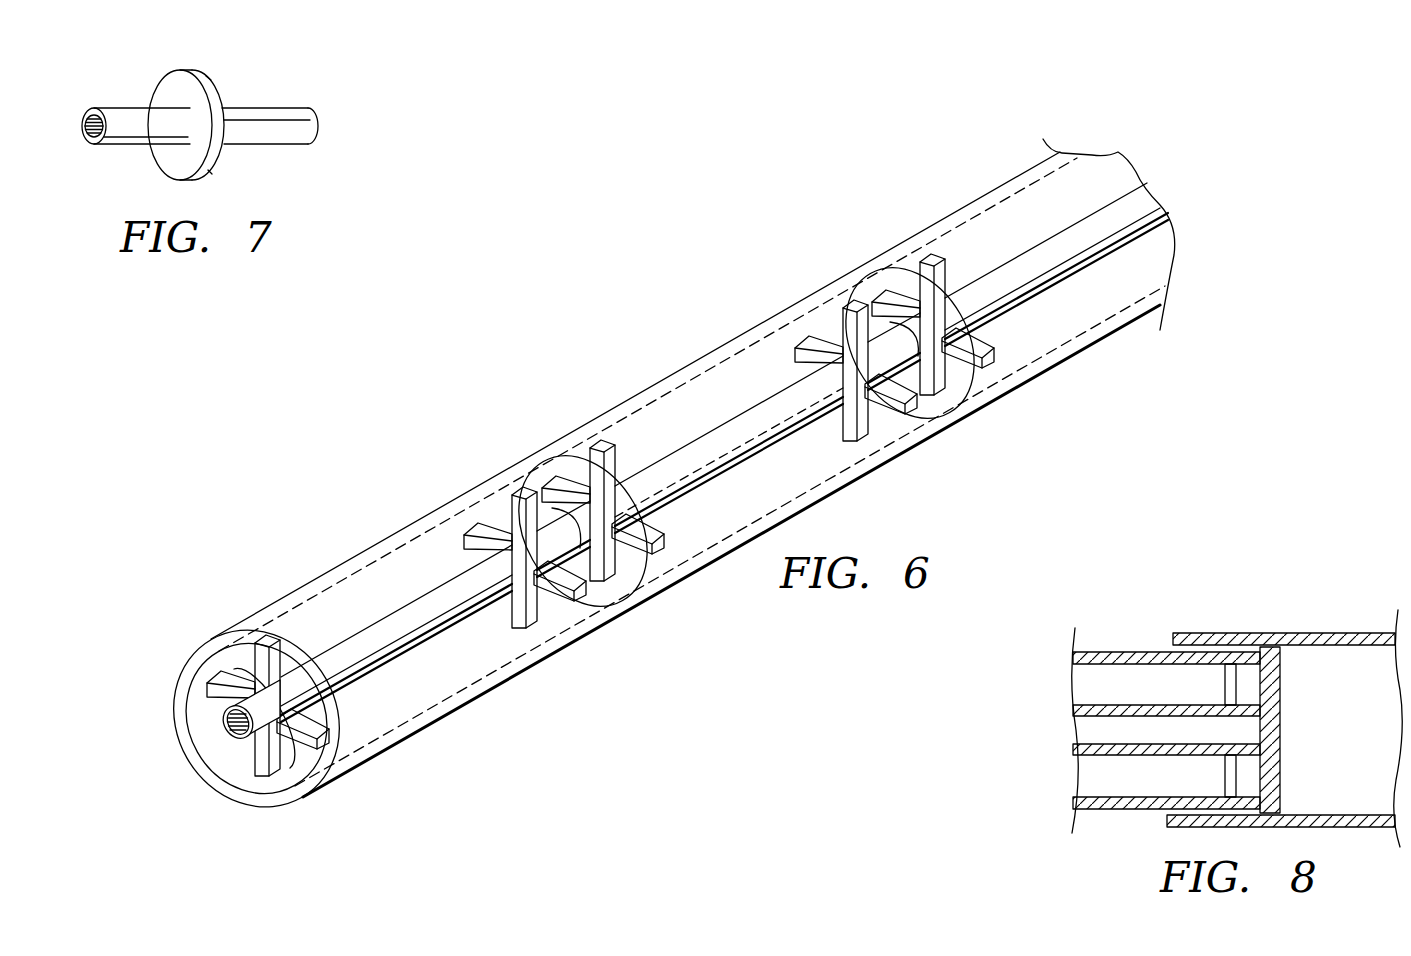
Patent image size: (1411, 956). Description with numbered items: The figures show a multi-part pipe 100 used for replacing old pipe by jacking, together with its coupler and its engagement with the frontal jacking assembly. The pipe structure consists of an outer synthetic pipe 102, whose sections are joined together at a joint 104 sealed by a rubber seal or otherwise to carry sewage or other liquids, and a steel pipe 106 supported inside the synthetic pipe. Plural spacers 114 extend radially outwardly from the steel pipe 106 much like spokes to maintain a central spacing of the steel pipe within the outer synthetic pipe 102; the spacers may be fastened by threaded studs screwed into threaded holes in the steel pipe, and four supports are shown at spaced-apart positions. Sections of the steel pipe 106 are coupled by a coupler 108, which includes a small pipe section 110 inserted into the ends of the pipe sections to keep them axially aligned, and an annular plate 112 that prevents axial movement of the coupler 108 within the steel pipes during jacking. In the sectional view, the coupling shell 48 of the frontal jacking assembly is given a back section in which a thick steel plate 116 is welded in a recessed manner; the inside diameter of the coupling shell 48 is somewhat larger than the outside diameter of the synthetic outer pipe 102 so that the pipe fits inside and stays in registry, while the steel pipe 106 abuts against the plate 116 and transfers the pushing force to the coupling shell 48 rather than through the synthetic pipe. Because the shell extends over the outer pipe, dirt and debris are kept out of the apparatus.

In FIG. 8, the coupling shell 48 is at (1308, 632).
In FIG. 6, the multi-part pipe 100 is at (658, 488).
In FIG. 6, the outer synthetic pipe 102 is at (367, 551).
In FIG. 8, the outer synthetic pipe 102 is at (1103, 652).
In FIG. 6, the joint 104 is at (947, 420).
In FIG. 6, the steel pipe 106 is at (413, 635).
In FIG. 8, the steel pipe 106 is at (1170, 704).
In FIG. 7, the coupler 108 is at (200, 119).
In FIG. 6, the coupler 108 is at (603, 590).
In FIG. 7, the small pipe section 110 is at (121, 147).
In FIG. 7, the annular plate 112 is at (178, 87).
In FIG. 6, the spacers 114 is at (257, 758).
In FIG. 8, the spacers 114 is at (1223, 767).
In FIG. 8, the thick steel plate 116 is at (1282, 700).